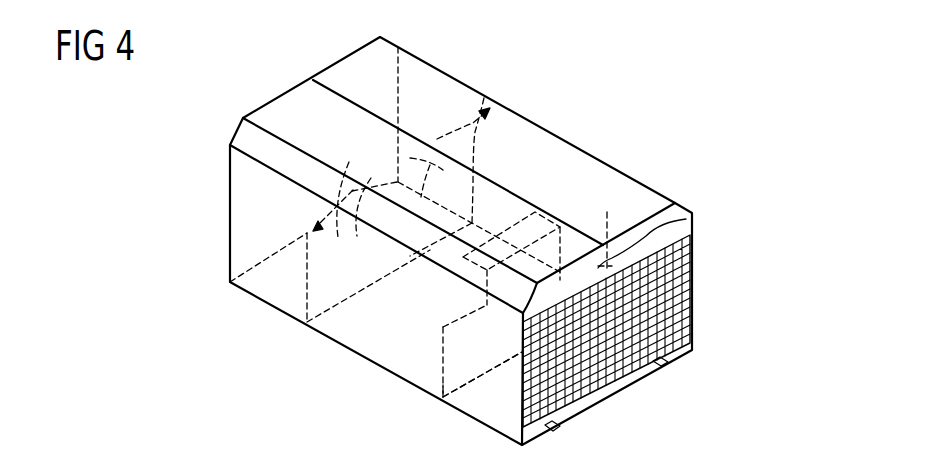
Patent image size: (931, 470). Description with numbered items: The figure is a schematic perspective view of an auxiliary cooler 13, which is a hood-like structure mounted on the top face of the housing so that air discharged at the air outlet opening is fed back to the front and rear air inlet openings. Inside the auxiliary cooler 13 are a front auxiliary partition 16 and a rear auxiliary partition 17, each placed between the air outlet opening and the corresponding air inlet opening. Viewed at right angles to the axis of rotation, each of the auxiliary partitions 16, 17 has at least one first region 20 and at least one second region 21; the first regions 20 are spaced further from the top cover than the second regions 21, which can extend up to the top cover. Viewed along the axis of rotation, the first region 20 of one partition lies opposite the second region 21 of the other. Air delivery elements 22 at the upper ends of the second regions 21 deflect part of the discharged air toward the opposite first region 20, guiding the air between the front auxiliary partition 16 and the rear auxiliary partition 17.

The auxiliary cooler 13 is at (280, 83).
The front auxiliary partition 16 is at (312, 297).
The rear auxiliary partition 17 is at (446, 382).
The first region 20 is at (692, 215).
The second region 21 is at (436, 166).
The air delivery element 22 is at (484, 98).